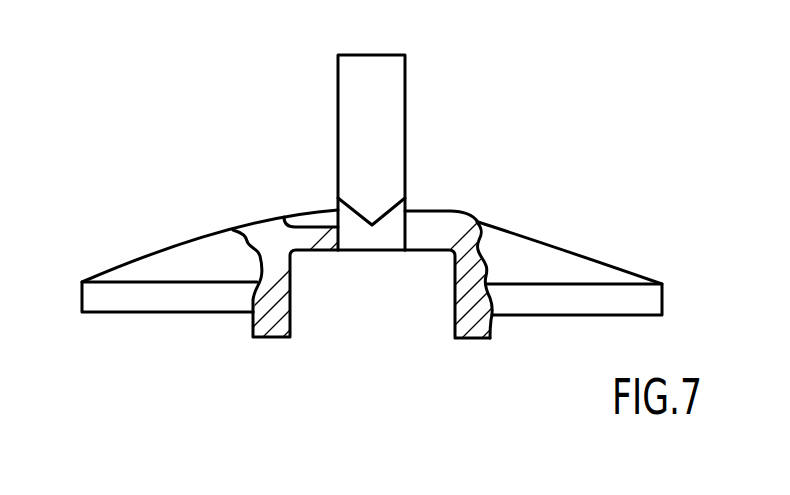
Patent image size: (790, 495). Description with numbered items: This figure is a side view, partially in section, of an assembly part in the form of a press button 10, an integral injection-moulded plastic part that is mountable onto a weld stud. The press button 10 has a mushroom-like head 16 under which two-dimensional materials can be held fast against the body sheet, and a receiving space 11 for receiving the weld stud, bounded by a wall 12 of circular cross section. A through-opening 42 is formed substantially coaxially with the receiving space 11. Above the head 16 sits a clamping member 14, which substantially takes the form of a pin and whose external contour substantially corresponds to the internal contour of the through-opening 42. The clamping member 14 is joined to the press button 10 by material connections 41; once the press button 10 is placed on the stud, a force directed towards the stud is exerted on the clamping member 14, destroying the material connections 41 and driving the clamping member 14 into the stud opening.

The press button 10 is at (133, 244).
The receiving space 11 is at (323, 310).
The wall 12 is at (472, 338).
The clamping member 14 is at (383, 82).
The head 16 is at (568, 262).
The material connections 41 is at (312, 194).
The through-opening 42 is at (378, 243).